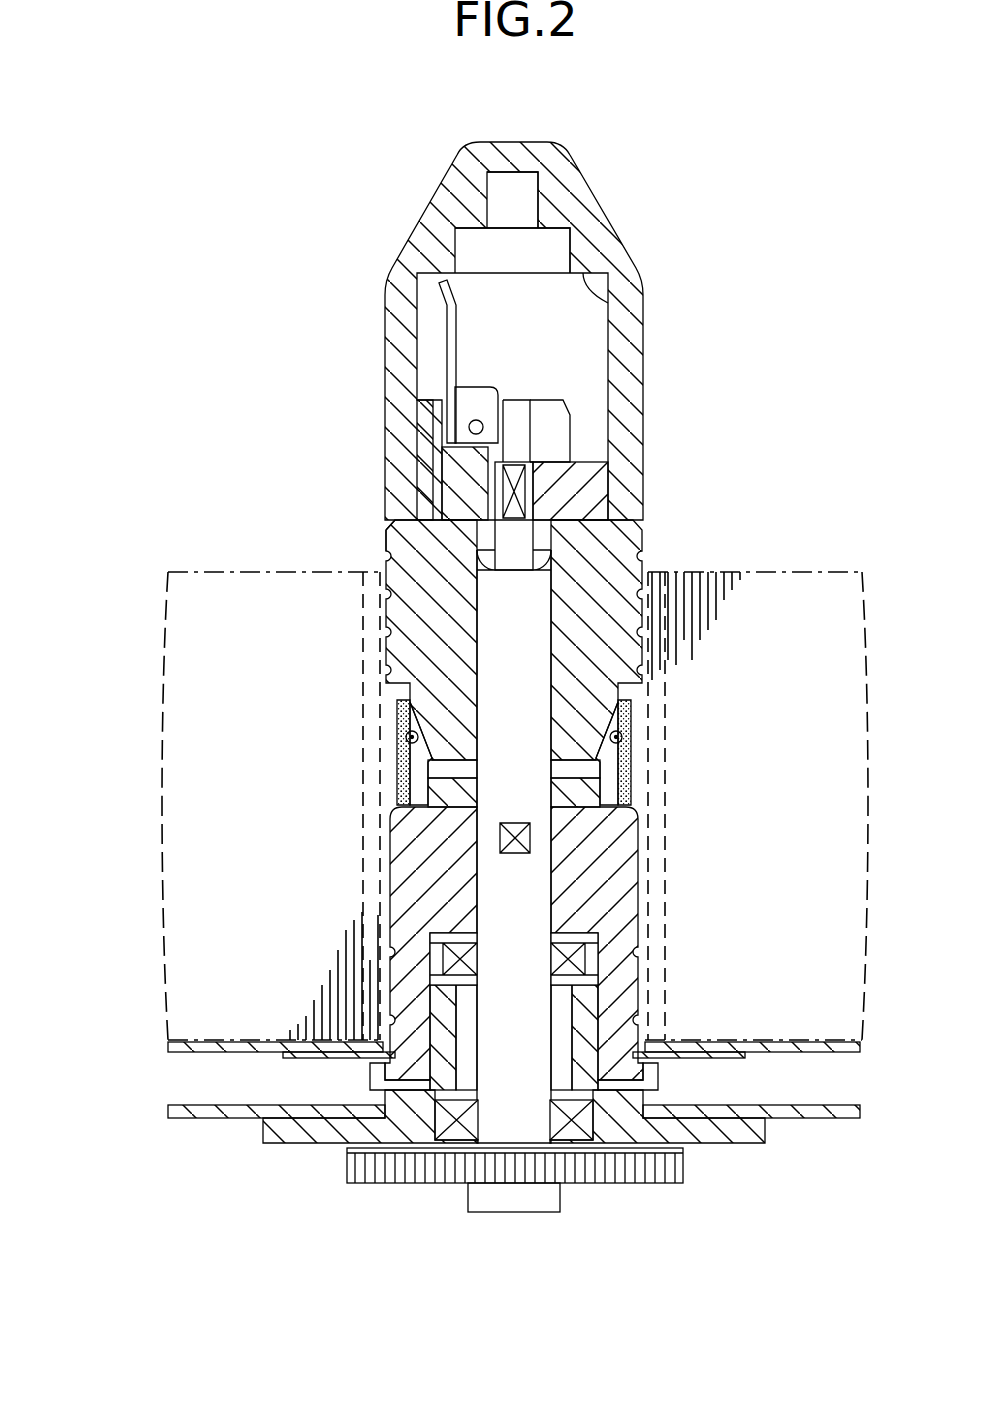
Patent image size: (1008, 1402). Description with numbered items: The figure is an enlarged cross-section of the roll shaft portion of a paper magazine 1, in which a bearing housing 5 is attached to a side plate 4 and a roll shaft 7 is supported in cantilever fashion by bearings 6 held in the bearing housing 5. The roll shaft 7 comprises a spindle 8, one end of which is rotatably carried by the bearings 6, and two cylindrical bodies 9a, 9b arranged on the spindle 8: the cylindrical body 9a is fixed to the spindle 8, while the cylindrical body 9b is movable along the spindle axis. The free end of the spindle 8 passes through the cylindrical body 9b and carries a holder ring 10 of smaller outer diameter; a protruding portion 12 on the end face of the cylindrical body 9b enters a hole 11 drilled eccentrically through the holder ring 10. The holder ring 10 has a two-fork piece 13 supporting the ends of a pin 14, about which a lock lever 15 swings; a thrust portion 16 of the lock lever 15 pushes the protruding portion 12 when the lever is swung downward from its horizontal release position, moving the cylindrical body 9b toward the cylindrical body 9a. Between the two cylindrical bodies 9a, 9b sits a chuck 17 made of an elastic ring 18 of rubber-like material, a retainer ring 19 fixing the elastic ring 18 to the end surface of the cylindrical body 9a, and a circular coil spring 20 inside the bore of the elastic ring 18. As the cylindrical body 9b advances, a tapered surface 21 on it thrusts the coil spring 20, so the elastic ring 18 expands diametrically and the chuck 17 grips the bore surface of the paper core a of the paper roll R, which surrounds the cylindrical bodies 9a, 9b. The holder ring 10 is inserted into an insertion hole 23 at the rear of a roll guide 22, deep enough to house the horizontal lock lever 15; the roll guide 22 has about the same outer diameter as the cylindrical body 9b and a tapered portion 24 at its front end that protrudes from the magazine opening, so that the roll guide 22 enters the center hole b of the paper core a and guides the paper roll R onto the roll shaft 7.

The paper magazine 1 is at (458, 1216).
The side plate 4 is at (228, 1118).
The bearing housing 5 is at (315, 1137).
The bearings 6 is at (572, 960).
The roll shaft 7 is at (434, 948).
The spindle 8 is at (510, 890).
The fixed cylindrical body 9a is at (400, 935).
The movable cylindrical body 9b is at (400, 660).
The holder ring 10 is at (580, 502).
The hole 11 is at (460, 495).
The protruding portion 12 is at (470, 440).
The two-fork piece 13 is at (560, 430).
The pin 14 is at (476, 418).
The lock lever 15 is at (450, 330).
The thrust portion 16 is at (505, 417).
The chuck 17 is at (376, 775).
The elastic ring 18 is at (397, 710).
The retainer ring 19 is at (605, 805).
The circular coil spring 20 is at (637, 745).
The tapered surface 21 is at (633, 733).
The roll guide 22 is at (411, 319).
The insertion hole 23 is at (600, 303).
The tapered portion 24 is at (433, 188).
The paper roll R is at (175, 570).
The paper core a is at (372, 608).
The center hole b is at (385, 548).